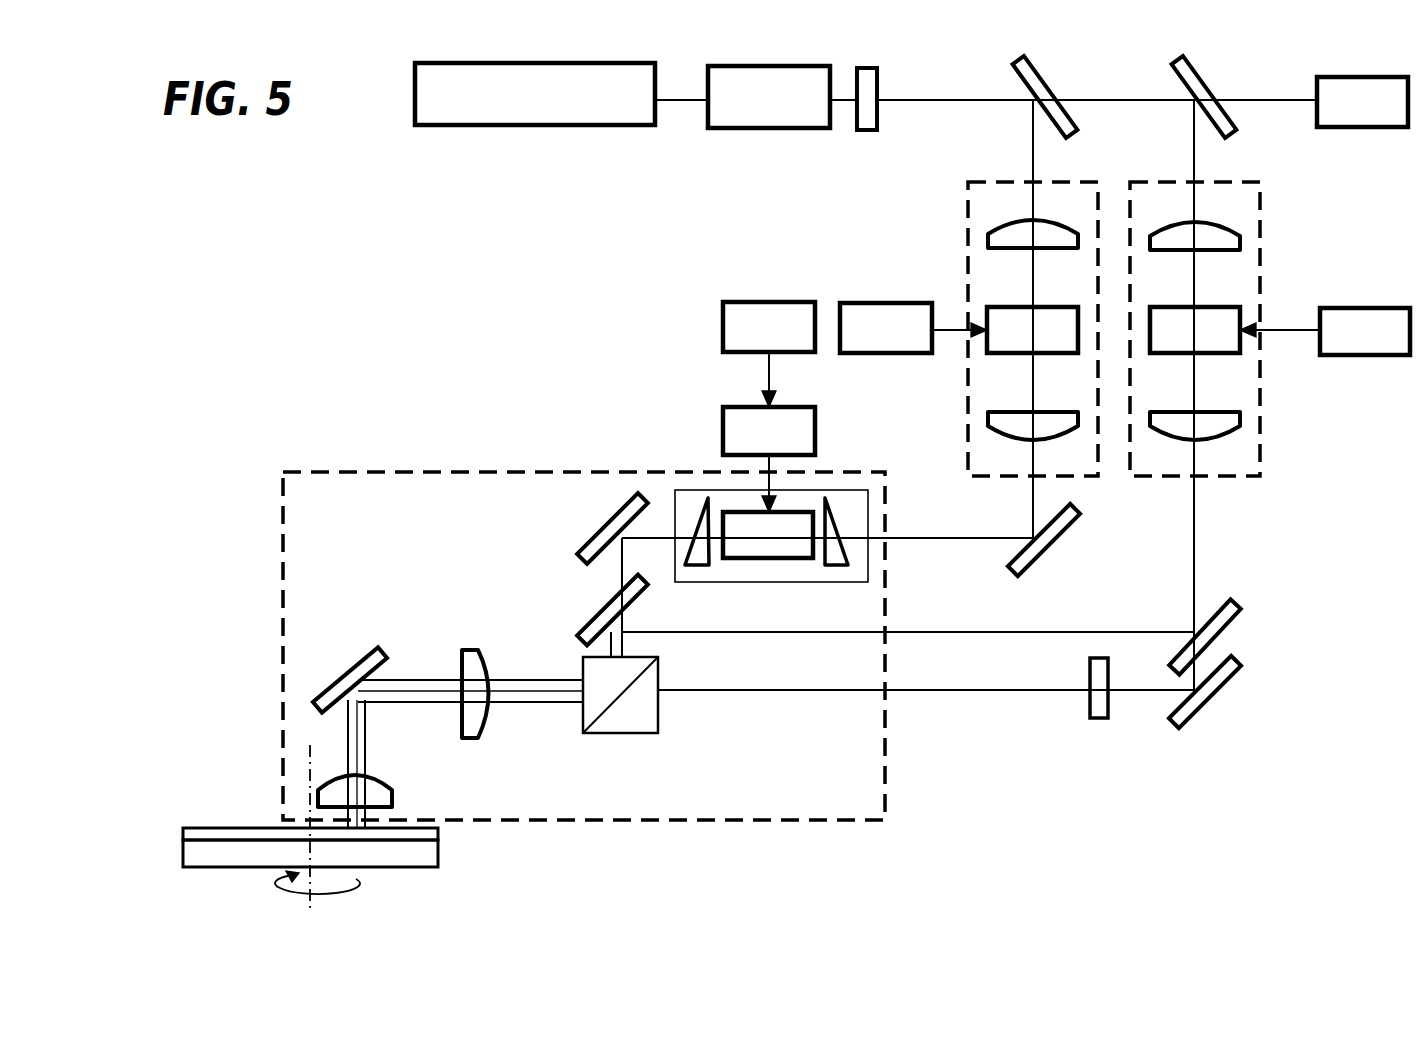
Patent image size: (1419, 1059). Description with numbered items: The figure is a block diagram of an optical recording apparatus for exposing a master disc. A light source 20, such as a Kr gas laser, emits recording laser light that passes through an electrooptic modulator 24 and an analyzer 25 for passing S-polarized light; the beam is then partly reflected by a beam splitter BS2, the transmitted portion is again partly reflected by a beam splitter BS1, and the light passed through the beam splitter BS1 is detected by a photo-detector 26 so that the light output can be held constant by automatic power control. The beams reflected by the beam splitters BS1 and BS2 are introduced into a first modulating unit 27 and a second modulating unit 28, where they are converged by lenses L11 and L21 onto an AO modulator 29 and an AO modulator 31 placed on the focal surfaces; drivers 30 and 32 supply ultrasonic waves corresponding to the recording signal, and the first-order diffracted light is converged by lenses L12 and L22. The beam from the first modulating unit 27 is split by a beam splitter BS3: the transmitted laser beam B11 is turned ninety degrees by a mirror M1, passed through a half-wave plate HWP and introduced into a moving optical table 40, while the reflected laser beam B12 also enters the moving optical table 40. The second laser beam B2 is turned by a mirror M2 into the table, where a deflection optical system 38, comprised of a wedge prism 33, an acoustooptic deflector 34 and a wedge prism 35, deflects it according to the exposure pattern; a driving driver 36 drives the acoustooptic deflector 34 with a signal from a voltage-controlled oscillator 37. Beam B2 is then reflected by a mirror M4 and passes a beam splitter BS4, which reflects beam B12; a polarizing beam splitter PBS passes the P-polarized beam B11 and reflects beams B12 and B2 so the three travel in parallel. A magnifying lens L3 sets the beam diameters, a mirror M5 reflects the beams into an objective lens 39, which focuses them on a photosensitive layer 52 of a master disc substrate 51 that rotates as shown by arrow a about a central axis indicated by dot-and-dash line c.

The light source 20 is at (545, 127).
The electrooptic modulator 24 is at (758, 130).
The analyzer 25 is at (866, 132).
The photo-detector 26 is at (1362, 128).
The first modulating unit 27 is at (1143, 180).
The second modulating unit 28 is at (995, 180).
The AO modulator 29 is at (1223, 306).
The driver 30 is at (1372, 307).
The AO modulator 31 is at (1003, 306).
The driver 32 is at (887, 303).
The wedge prism 33 is at (836, 567).
The acoustooptic deflector 34 is at (768, 560).
The wedge prism 35 is at (700, 567).
The driving driver 36 is at (723, 432).
The voltage-controlled oscillator 37 is at (770, 300).
The deflection optical system 38 is at (780, 512).
The objective lens 39 is at (393, 792).
The moving optical table 40 is at (450, 470).
The master disc substrate 51 is at (440, 855).
The photosensitive layer 52 is at (440, 835).
The beam splitter BS1 is at (1219, 97).
The beam splitter BS2 is at (1057, 97).
The beam splitter BS3 is at (1228, 636).
The beam splitter BS4 is at (599, 610).
The mirror M1 is at (1209, 692).
The mirror M2 is at (1049, 540).
The mirror M4 is at (610, 524).
The mirror M5 is at (350, 674).
The magnifying lens L3 is at (472, 673).
The lens L11 is at (1190, 217).
The lens L12 is at (1190, 444).
The lens L21 is at (1027, 216).
The lens L22 is at (1027, 444).
The polarizing beam splitter PBS is at (620, 711).
The half-wave plate HWP is at (1097, 705).
The second laser beam B2 is at (1033, 500).
The 1-1th laser beam B11 is at (926, 672).
The 1-2th laser beam B12 is at (908, 613).
The arrow a is at (322, 873).
The dot-and-dash line c is at (330, 784).